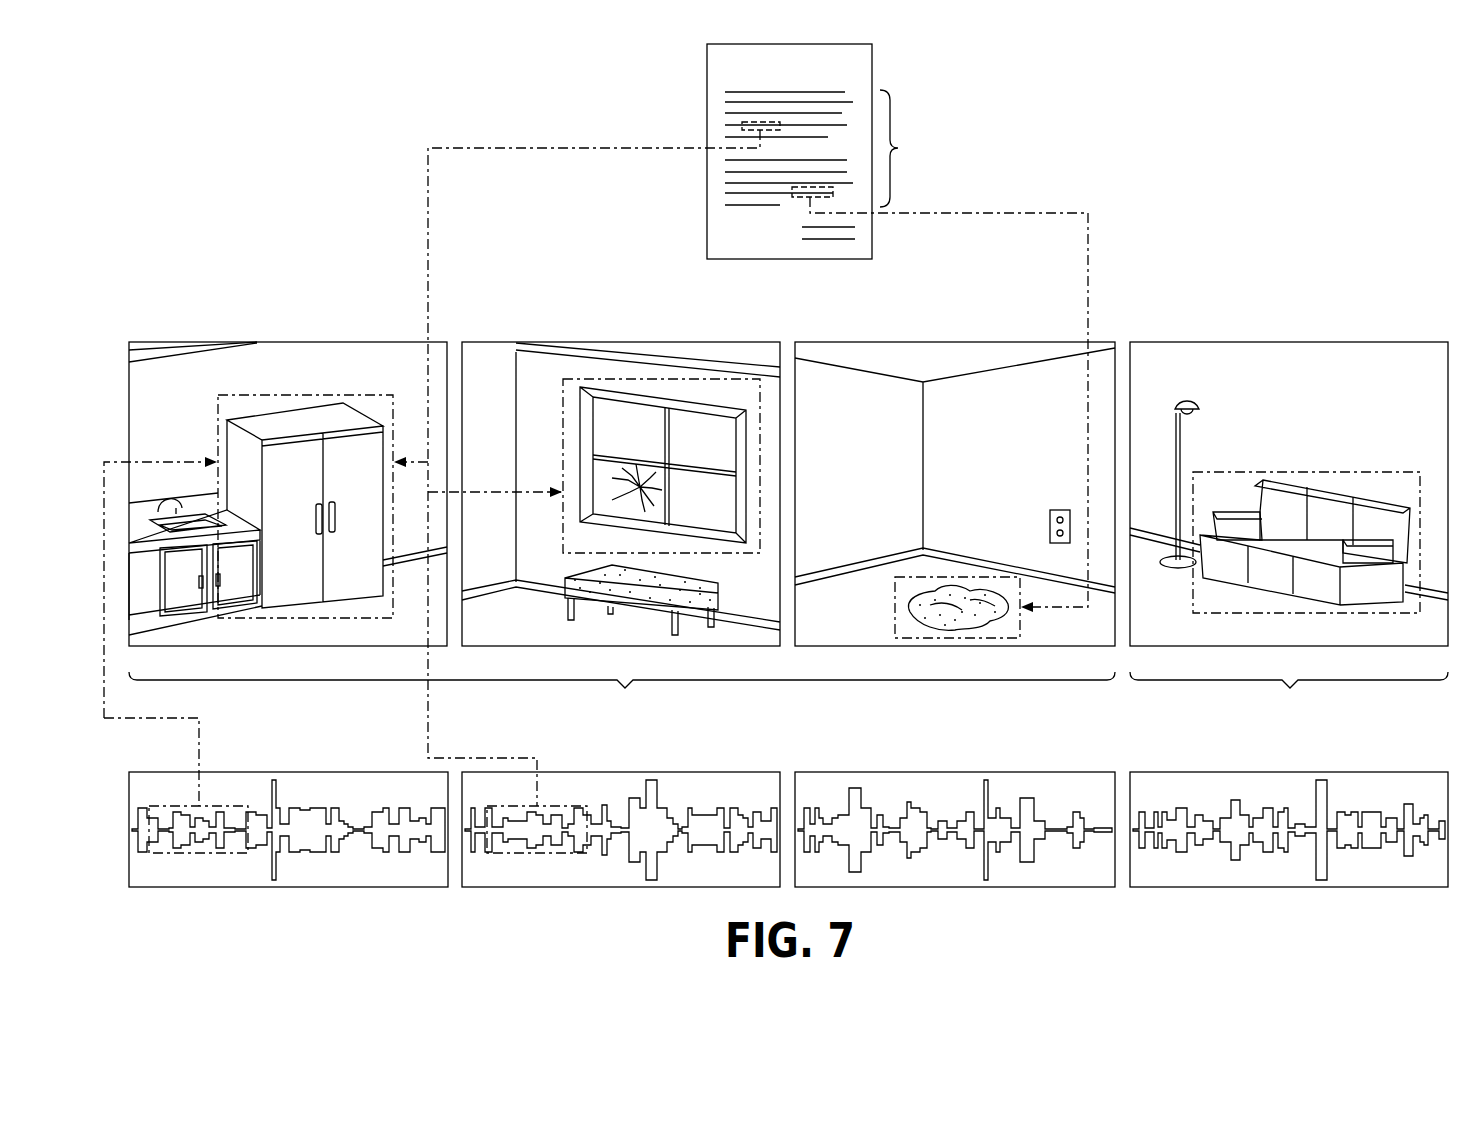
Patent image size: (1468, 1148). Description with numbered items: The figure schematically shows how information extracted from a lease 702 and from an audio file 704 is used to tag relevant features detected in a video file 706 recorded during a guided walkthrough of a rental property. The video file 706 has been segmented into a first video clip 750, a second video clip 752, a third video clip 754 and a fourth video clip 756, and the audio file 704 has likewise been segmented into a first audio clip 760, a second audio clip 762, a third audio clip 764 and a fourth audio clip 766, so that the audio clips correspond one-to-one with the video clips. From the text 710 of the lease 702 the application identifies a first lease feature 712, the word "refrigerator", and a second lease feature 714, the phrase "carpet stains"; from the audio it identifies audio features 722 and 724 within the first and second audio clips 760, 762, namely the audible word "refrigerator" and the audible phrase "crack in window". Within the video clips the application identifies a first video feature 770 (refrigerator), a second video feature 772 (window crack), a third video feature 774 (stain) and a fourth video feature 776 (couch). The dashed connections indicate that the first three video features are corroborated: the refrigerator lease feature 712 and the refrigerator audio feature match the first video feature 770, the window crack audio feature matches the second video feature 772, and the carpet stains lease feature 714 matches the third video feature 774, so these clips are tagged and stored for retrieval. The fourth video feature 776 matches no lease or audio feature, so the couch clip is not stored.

The lease 702 is at (872, 63).
The audio file 704 is at (108, 853).
The video file 706 is at (112, 388).
The text 710 is at (917, 148).
The first lease feature 712 is at (720, 118).
The second lease feature 714 is at (797, 205).
The second audio feature 722 is at (160, 853).
The tagged audio segment 2 724 is at (520, 853).
The first video clip 750 is at (152, 342).
The second video clip 752 is at (485, 342).
The third video clip 754 is at (1037, 342).
The fourth video clip 756 is at (1375, 342).
The first audio clip 760 is at (345, 772).
The second audio clip 762 is at (477, 887).
The third audio clip 764 is at (962, 772).
The fourth audio clip 766 is at (1440, 772).
The first video feature 770 is at (275, 395).
The second video feature 772 is at (760, 465).
The third video feature 774 is at (895, 596).
The fourth video feature 776 is at (1308, 470).